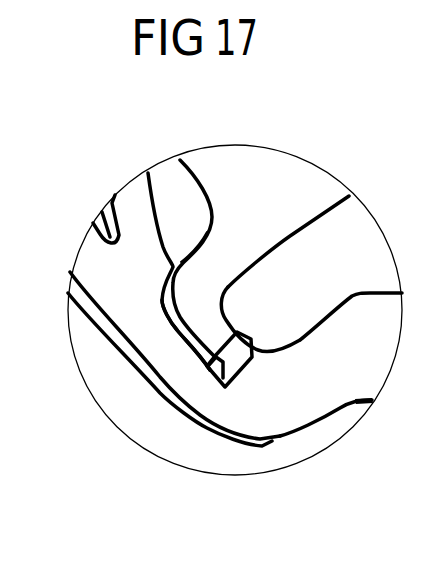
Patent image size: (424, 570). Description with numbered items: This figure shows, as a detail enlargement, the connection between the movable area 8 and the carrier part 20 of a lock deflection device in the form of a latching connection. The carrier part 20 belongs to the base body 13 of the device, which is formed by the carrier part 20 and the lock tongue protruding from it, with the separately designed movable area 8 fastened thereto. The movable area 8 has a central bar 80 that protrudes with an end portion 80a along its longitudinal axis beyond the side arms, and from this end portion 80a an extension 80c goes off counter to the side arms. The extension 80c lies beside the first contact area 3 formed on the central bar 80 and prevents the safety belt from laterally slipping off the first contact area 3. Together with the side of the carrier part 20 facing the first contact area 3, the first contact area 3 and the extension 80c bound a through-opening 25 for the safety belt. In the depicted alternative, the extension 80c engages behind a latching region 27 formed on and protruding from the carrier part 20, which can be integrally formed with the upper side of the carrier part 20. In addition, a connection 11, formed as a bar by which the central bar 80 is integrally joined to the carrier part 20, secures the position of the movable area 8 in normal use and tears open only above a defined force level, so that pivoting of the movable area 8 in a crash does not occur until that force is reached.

The movable area 8 is at (246, 160).
The base body 13 is at (107, 263).
The central bar 80 is at (273, 218).
The end portion 80a is at (228, 287).
The extension 80c is at (210, 327).
The latching region 27 is at (237, 355).
The first contact area 3 is at (328, 210).
The through-opening 25 is at (310, 302).
The carrier part 20 is at (132, 312).
The connection 11 is at (238, 384).